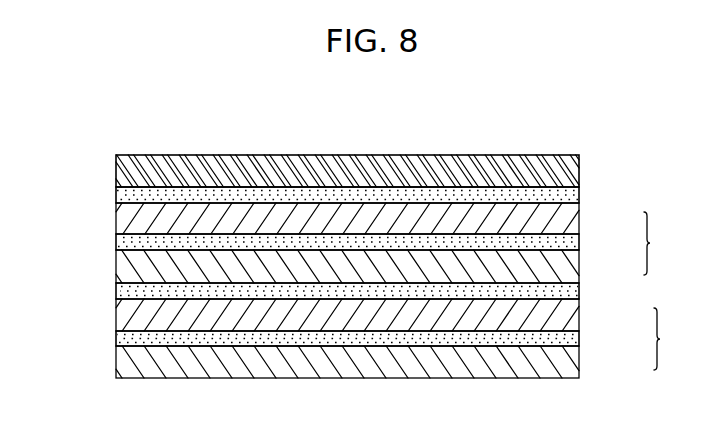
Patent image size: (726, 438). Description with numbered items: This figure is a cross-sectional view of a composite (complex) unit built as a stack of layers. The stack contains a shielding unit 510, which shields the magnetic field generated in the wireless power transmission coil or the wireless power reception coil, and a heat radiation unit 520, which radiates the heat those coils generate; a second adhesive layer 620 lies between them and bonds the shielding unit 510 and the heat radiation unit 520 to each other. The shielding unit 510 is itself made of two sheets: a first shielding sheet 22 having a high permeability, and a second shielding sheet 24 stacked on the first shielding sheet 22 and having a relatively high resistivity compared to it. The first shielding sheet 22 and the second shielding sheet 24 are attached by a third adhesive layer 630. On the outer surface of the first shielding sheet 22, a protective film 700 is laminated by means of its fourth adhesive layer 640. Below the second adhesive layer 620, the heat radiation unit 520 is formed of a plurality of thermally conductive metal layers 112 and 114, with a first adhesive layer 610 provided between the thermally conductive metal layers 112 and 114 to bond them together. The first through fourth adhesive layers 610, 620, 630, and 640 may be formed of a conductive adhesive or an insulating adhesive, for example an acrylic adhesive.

The protective film 700 is at (571, 173).
The fourth adhesive layer 640 is at (122, 197).
The third adhesive layer 630 is at (122, 243).
The second adhesive layer 620 is at (122, 291).
The first adhesive layer 610 is at (122, 339).
The first shielding sheet 22 is at (569, 220).
The second shielding sheet 24 is at (569, 271).
The thermally conductive metal layer 112 is at (569, 316).
The thermally conductive metal layer 114 is at (569, 366).
The shielding unit 510 is at (404, 243).
The heat radiation unit 520 is at (409, 338).